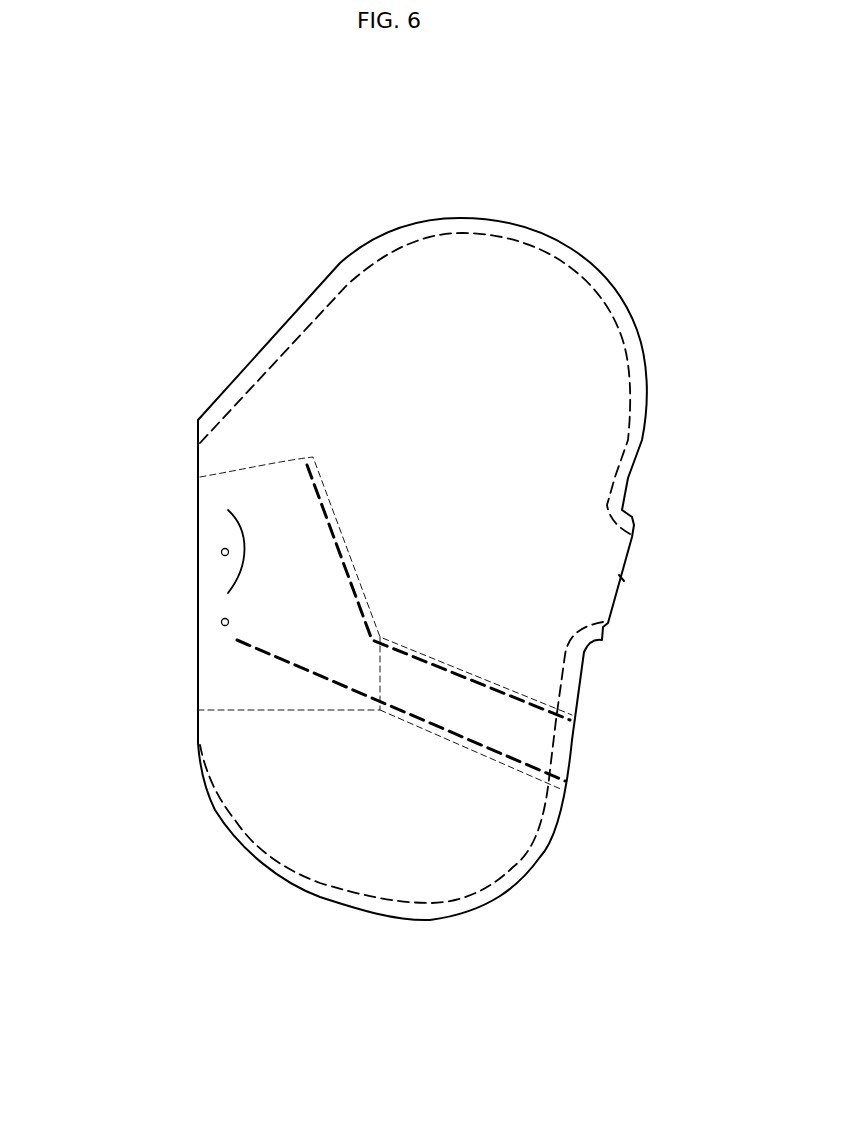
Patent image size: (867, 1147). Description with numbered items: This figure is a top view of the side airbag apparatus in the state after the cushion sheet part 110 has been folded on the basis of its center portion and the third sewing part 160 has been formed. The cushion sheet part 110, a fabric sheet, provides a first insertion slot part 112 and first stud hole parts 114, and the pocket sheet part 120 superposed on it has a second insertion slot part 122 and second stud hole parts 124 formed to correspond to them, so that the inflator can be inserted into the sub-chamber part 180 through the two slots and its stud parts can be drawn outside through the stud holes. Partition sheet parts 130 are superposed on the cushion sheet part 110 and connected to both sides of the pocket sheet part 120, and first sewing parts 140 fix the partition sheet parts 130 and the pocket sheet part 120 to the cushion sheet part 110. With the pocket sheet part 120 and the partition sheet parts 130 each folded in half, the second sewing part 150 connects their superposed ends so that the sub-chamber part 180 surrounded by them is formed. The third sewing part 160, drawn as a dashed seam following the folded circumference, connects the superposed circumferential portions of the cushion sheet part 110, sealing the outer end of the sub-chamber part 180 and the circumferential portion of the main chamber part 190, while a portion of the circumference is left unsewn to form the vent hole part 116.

The cushion sheet part 110 is at (594, 245).
The third sewing part 160 is at (597, 300).
The pocket sheet part 120 is at (255, 448).
The sub-chamber part 180 is at (270, 546).
The first insertion slot part 112 is at (222, 523).
The second insertion slot part 122 is at (146, 545).
The first stud hole parts 114 is at (221, 553).
The second stud hole parts 124 is at (133, 587).
The second sewing part 150 is at (337, 537).
The main chamber part 190 is at (540, 574).
The vent hole part 116 is at (623, 580).
The first sewing parts 140 is at (500, 756).
The partition sheet parts 130 is at (506, 790).